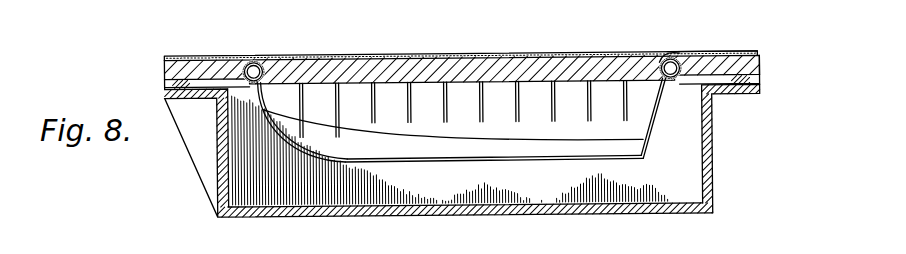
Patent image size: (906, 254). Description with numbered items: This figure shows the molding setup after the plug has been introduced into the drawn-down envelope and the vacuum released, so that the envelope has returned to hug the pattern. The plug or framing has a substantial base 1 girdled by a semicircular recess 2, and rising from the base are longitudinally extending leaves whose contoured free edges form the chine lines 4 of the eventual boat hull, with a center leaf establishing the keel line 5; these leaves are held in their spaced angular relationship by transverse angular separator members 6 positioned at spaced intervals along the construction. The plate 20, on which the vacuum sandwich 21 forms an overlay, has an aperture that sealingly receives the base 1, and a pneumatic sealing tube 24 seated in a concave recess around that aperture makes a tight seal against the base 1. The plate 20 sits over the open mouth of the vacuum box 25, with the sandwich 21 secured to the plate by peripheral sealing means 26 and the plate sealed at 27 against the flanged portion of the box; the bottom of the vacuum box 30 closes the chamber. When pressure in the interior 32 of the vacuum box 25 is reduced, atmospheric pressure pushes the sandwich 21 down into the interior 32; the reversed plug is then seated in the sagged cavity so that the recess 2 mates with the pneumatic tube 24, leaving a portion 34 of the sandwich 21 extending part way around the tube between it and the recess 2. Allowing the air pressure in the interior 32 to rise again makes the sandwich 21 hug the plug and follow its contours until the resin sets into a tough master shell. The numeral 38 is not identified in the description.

The base 1 is at (440, 70).
The semicircular recess 2 is at (266, 66).
The chine lines 4 is at (500, 142).
The keel line 5 is at (380, 161).
The transverse angular separator members 6 is at (403, 95).
The plate 20 is at (763, 64).
The vacuum sandwich 21 is at (692, 50).
The pneumatic sealing tube 24 is at (674, 83).
The vacuum box 25 is at (212, 176).
The peripheral sealing means 26 is at (166, 61).
The peripheral seal 27 is at (168, 85).
The bottom of the vacuum box 30 is at (595, 216).
The interior of the vacuum box 32 is at (678, 180).
The portion of the sandwich 34 is at (650, 62).
The upper element 38 is at (495, 4).